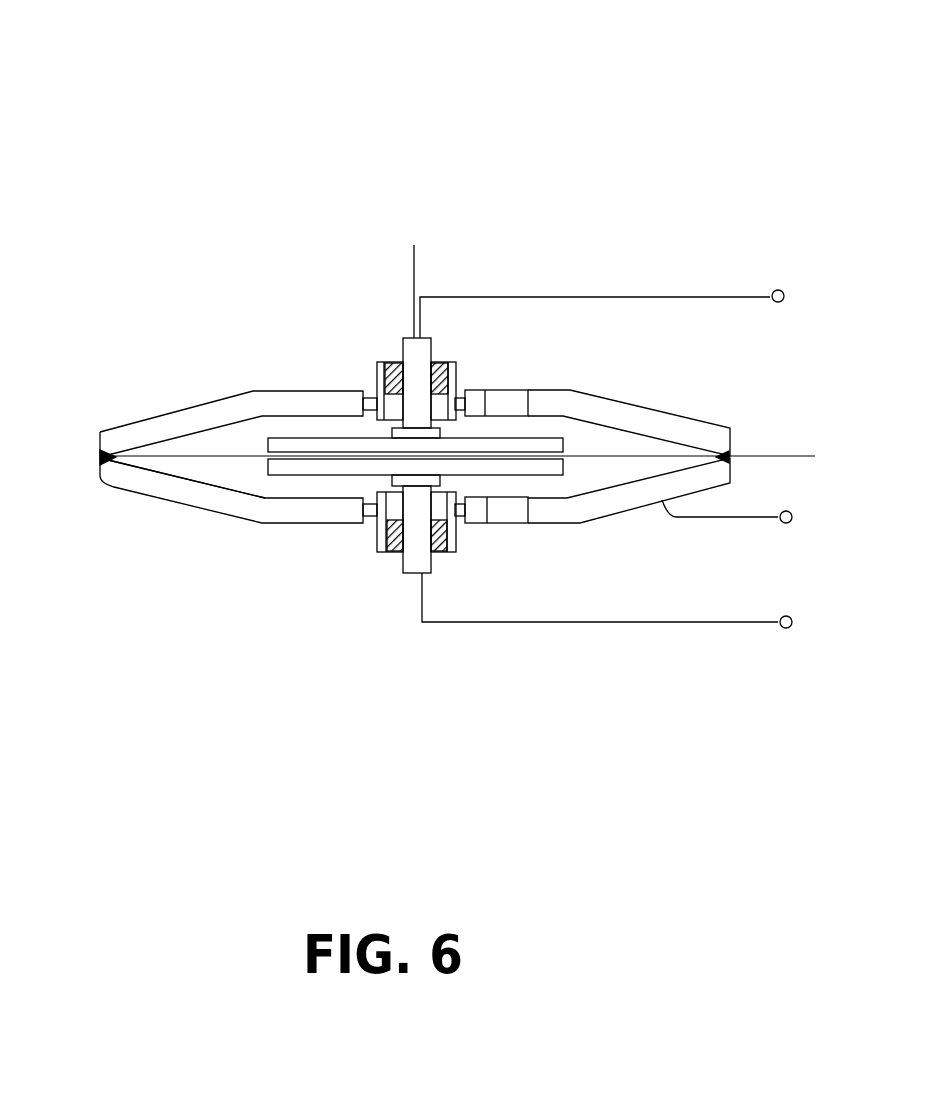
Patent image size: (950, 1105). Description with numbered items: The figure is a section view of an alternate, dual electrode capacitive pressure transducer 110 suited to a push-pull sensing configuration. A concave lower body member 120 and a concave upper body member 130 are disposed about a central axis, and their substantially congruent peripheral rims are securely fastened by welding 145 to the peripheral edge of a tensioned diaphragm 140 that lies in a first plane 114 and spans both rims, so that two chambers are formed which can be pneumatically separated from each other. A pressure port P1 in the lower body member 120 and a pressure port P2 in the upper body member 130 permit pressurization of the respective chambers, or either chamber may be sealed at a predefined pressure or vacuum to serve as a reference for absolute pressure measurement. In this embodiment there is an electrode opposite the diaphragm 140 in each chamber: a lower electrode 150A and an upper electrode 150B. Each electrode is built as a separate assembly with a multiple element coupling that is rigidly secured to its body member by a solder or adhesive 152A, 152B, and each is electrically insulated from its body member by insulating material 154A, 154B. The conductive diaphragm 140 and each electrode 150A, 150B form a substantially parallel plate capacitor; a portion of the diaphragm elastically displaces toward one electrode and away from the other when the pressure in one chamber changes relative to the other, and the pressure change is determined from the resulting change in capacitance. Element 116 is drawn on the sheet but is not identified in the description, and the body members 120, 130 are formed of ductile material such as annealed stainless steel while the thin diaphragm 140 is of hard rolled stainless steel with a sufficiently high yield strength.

The capacitive pressure transducer 110 is at (248, 103).
The first plane 114 is at (790, 452).
The outer frame wall 116 is at (112, 427).
The lower body member 120 is at (153, 498).
The upper body member 130 is at (132, 423).
The tensioned diaphragm 140 is at (193, 462).
The welding 145 is at (102, 462).
The electrode 150A is at (293, 479).
The electrode 150B is at (295, 438).
The solder or adhesive 152A is at (375, 519).
The solder or adhesive 152B is at (373, 397).
The insulating material 154A is at (444, 557).
The insulating material 154B is at (444, 361).
The pressure port P1 is at (516, 525).
The pressure port P2 is at (501, 387).